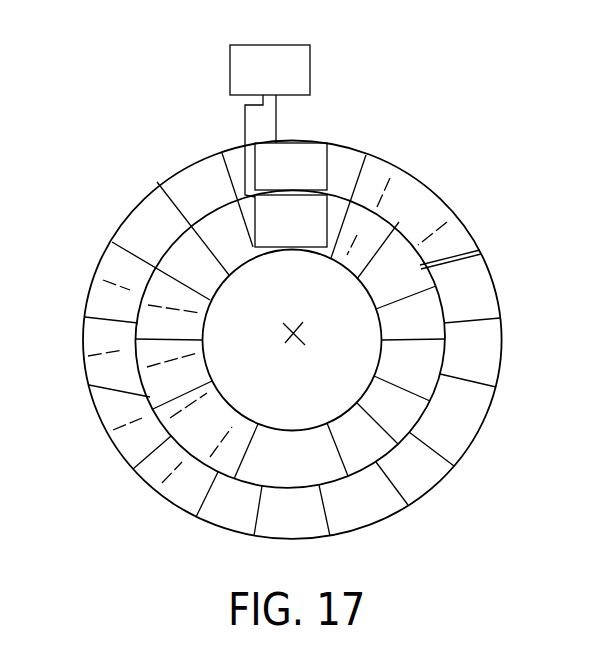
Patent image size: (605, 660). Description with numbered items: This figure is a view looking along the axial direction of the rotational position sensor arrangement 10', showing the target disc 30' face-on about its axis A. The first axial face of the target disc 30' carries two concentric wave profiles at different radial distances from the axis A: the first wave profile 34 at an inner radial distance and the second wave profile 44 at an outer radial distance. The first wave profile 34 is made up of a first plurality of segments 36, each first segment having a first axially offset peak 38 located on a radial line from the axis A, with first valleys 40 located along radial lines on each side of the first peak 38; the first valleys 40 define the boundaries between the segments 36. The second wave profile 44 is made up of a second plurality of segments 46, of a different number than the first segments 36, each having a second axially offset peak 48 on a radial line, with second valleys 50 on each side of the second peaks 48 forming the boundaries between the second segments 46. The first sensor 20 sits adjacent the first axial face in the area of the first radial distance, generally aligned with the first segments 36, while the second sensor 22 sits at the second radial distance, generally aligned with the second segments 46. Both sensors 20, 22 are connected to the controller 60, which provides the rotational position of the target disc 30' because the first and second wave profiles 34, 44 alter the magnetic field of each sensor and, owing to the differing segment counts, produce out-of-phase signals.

The rotational position sensor arrangement 10' is at (64, 45).
The controller 60 is at (245, 72).
The first sensor 20 is at (314, 162).
The second sensor 22 is at (333, 204).
The target disc 30' is at (292, 335).
The first wave profile 34 is at (425, 468).
The first plurality of segments 36 is at (147, 195).
The first valleys 40 is at (119, 243).
The first axially offset peak 38 is at (108, 282).
The second wave profile 44 is at (445, 308).
The second plurality of segments 46 is at (430, 367).
The second axially offset peak 48 is at (481, 251).
The second valleys 50 is at (374, 203).
The axis A is at (297, 327).